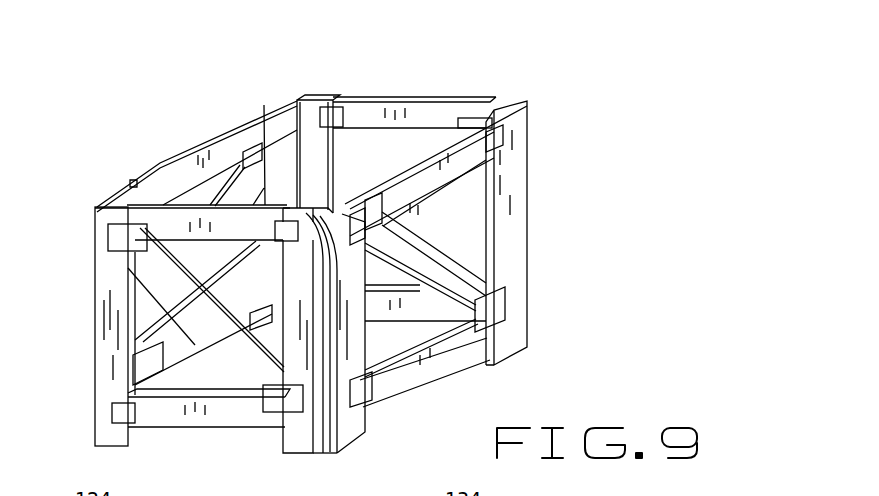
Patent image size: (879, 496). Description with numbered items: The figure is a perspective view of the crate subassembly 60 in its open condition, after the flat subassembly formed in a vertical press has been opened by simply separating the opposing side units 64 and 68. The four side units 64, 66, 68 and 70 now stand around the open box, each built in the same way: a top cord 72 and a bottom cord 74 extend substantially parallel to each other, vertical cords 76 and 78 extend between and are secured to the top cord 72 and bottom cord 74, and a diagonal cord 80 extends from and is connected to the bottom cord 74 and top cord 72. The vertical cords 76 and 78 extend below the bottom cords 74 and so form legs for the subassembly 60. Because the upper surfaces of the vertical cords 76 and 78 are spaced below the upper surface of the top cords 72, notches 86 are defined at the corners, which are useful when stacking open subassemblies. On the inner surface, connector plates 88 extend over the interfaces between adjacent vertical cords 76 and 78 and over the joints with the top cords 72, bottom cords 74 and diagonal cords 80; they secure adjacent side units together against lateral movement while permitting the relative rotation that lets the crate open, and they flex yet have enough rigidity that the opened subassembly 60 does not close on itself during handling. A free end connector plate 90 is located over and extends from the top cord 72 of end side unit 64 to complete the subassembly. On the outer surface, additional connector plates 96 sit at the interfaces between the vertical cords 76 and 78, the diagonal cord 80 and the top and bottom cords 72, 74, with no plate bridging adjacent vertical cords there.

The crate subassembly 60 is at (310, 74).
The side unit 64 is at (236, 122).
The side unit 66 is at (424, 100).
The side unit 68 is at (418, 150).
The side unit 70 is at (190, 430).
The top cord 72 is at (213, 160).
The bottom cord 74 is at (185, 380).
The vertical cord 76 is at (210, 205).
The vertical cord 78 is at (133, 205).
The diagonal cord 80 is at (200, 264).
The notch 86 is at (300, 203).
The connector plate 88 is at (345, 118).
The free end connector plate 90 is at (282, 125).
The connector plate 96 is at (110, 238).